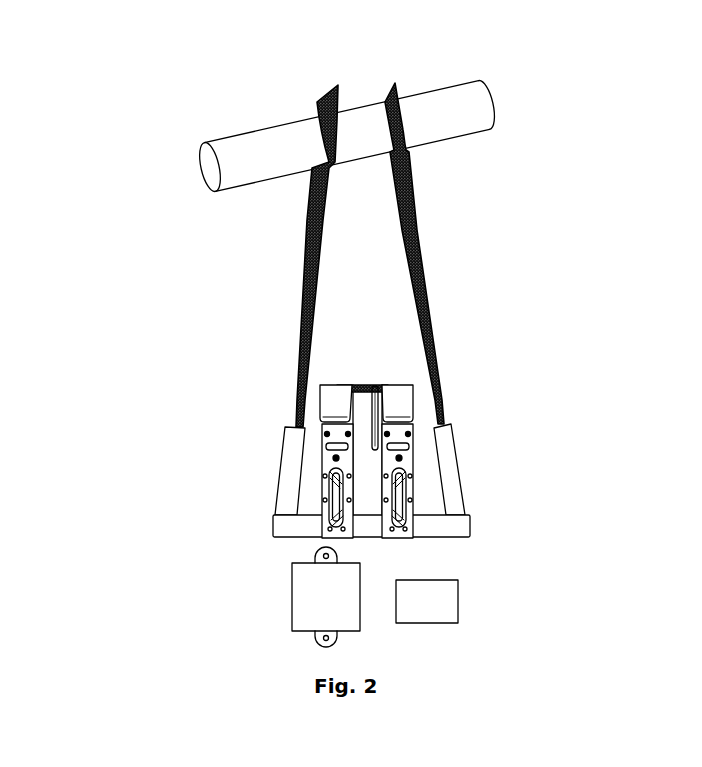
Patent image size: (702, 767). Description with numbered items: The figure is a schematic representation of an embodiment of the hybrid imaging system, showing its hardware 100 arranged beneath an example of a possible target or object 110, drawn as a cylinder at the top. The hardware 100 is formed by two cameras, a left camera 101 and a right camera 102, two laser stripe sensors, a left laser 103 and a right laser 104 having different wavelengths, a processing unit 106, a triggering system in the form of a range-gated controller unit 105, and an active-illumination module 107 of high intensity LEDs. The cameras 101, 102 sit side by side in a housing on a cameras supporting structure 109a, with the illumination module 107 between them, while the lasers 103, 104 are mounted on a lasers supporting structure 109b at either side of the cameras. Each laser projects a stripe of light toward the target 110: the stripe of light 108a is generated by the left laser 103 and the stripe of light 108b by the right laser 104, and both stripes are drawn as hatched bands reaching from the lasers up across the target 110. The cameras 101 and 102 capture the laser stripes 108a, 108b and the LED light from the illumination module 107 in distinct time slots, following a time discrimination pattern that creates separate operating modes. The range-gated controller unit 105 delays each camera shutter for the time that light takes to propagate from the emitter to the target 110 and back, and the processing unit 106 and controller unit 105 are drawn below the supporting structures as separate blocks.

The hardware 100 is at (212, 92).
The target 110 is at (472, 120).
The stripe of light generated by Laser One 108a is at (306, 260).
The stripe of light generated by Laser Two 108b is at (412, 182).
The left camera 101 is at (326, 402).
The right camera 102 is at (412, 394).
The active-illumination module 107 is at (370, 385).
The cameras supporting structure 109a is at (335, 466).
The lasers supporting structure 109b is at (452, 533).
The left laser 103 is at (290, 503).
The right laser 104 is at (458, 506).
The range-gated controller unit 105 is at (308, 622).
The processing unit 106 is at (447, 616).